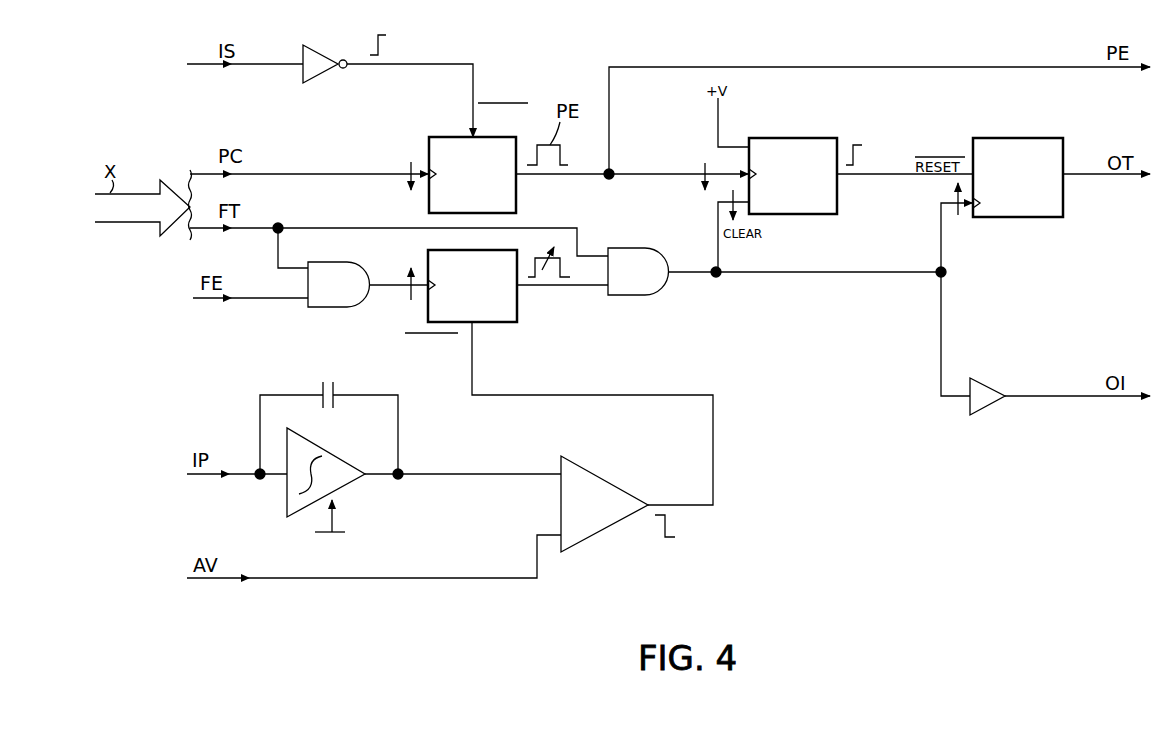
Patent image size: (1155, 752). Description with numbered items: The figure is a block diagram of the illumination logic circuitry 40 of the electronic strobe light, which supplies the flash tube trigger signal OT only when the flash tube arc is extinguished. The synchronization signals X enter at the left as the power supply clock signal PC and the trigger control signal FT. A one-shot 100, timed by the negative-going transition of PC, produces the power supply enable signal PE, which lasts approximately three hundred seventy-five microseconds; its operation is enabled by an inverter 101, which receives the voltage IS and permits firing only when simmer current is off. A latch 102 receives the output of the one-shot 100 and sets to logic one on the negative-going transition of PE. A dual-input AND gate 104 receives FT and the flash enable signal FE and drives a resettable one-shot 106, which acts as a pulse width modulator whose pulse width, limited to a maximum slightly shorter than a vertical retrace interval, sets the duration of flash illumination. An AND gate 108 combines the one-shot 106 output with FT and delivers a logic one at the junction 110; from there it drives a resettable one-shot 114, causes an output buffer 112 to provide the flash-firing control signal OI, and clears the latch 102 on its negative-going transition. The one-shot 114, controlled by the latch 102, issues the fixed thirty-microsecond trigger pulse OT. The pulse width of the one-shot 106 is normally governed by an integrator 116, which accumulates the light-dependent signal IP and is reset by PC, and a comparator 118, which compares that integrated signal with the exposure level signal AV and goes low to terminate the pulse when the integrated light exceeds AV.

The illumination logic circuitry 40 is at (870, 451).
The one-shot 100 is at (516, 195).
The inverter 101 is at (322, 53).
The latch 102 is at (812, 137).
The dual-input AND gate 104 is at (340, 308).
The resettable one-shot 106 is at (500, 322).
The AND gate 108 is at (628, 297).
The junction 110 is at (716, 278).
The output buffer 112 is at (990, 386).
The resettable one-shot 114 is at (1042, 137).
The integrator 116 is at (291, 386).
The comparator 118 is at (615, 487).